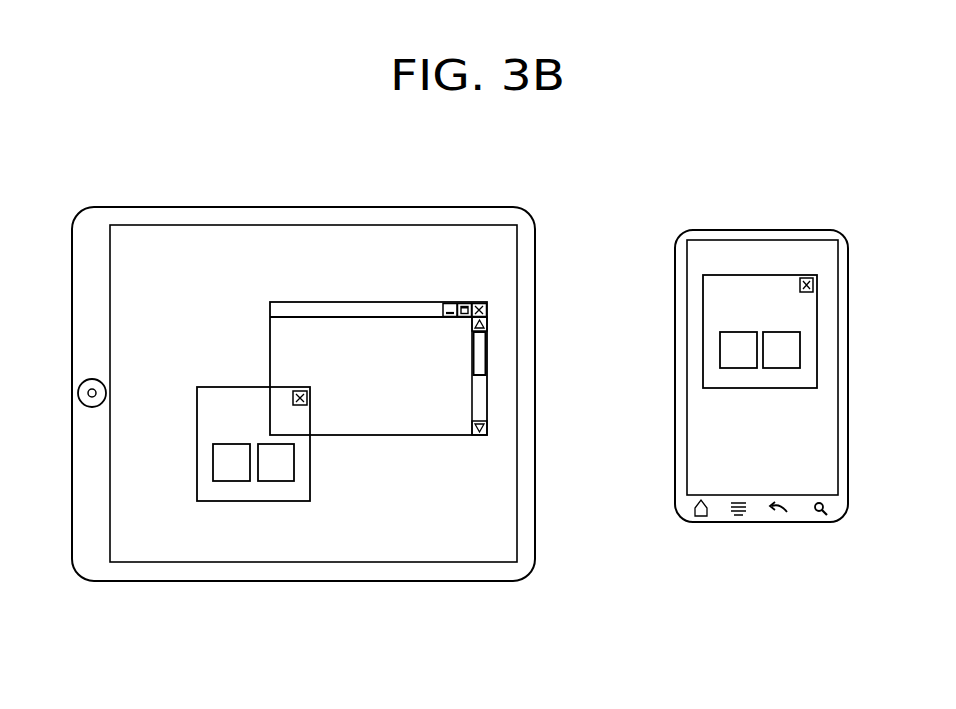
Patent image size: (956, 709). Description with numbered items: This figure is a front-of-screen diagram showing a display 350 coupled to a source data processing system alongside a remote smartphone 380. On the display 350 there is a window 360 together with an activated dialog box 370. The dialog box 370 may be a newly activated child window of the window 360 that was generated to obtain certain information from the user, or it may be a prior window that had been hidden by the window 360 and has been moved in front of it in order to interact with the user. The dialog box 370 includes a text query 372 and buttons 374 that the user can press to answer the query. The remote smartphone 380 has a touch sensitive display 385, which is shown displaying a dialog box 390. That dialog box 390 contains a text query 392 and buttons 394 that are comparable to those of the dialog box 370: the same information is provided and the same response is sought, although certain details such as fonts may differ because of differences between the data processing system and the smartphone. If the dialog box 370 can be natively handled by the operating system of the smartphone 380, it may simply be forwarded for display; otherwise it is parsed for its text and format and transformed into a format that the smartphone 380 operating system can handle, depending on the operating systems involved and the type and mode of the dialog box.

The display 350 is at (183, 207).
The window 360 is at (343, 302).
The dialog box 370 is at (235, 502).
The text query 372 is at (222, 416).
The buttons 374 is at (243, 481).
The remote smartphone 380 is at (803, 231).
The touch sensitive display 385 is at (762, 367).
The dialog box 390 is at (757, 390).
The text query 392 is at (727, 303).
The buttons 394 is at (748, 368).